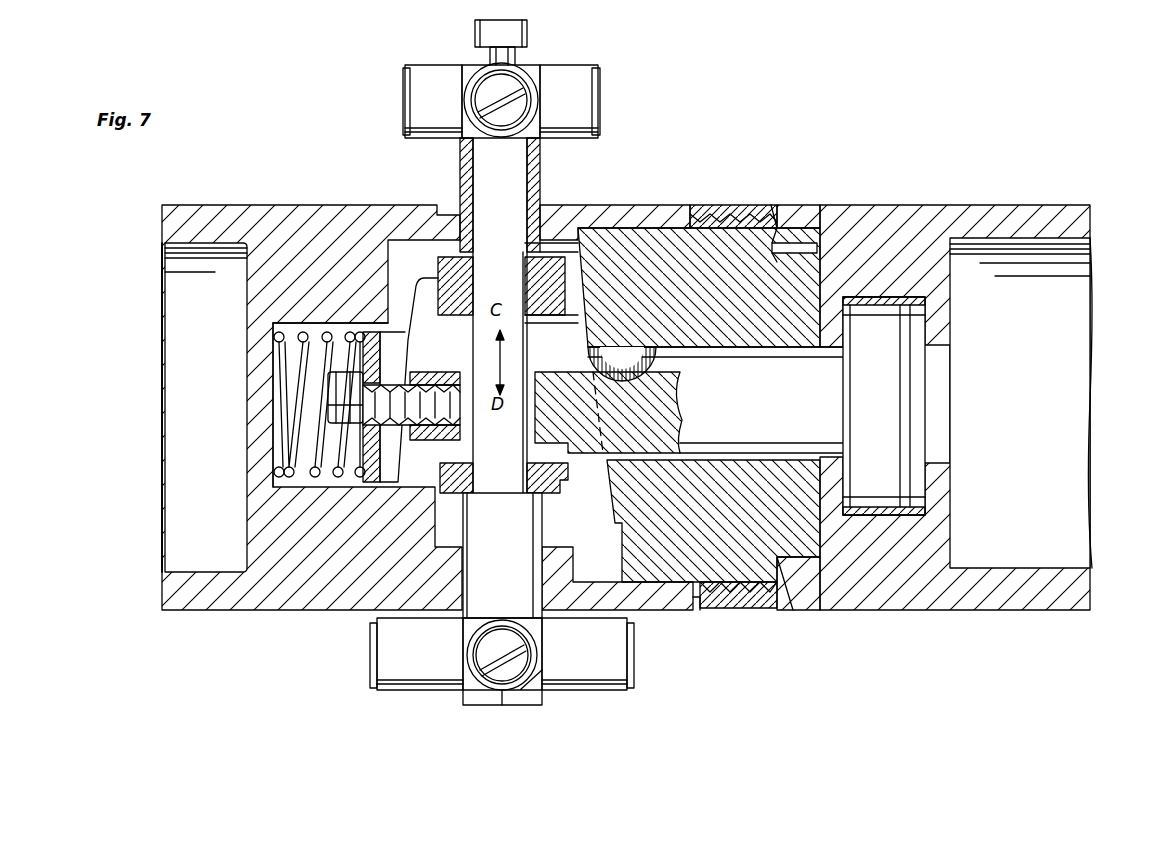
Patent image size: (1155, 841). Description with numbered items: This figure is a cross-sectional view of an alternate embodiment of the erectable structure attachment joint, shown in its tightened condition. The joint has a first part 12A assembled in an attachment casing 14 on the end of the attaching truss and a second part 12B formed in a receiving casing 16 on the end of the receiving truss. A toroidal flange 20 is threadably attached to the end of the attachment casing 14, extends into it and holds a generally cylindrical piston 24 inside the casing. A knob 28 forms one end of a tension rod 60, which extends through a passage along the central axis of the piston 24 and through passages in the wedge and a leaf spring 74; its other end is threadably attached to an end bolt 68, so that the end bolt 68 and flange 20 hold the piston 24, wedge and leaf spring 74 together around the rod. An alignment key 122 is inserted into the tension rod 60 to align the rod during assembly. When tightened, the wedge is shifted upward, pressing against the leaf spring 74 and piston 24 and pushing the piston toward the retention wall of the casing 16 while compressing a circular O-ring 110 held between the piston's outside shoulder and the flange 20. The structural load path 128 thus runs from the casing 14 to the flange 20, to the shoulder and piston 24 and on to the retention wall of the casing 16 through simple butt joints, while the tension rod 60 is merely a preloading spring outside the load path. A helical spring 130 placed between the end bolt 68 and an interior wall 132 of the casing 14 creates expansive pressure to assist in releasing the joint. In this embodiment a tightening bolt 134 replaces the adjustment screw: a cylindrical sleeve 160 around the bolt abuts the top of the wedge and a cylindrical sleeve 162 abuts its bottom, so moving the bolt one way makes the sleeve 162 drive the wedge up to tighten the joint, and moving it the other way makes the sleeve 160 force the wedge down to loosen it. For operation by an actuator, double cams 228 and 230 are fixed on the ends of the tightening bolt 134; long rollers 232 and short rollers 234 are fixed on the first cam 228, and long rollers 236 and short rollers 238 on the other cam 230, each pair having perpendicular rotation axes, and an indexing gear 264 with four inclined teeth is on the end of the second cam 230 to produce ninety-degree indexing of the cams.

The first part 12A is at (385, 178).
The second part 12B is at (1025, 168).
The attachment casing 14 is at (200, 612).
The receiving casing 16 is at (1030, 600).
The toroidal flange 20 is at (772, 600).
The piston 24 is at (640, 235).
The knob 28 is at (884, 406).
The tension rod 60 is at (715, 400).
The end bolt 68 is at (335, 396).
The leaf spring 74 is at (372, 335).
The O-ring 110 is at (800, 255).
The alignment key 122 is at (640, 360).
The structural load path 128 is at (735, 215).
The helical spring 130 is at (300, 350).
The interior wall 132 is at (265, 430).
The tightening bolt 134 is at (500, 378).
The cylindrical sleeve 160 is at (540, 178).
The cylindrical sleeve 162 is at (502, 555).
The double cam 228 is at (500, 79).
The double cam 230 is at (501, 679).
The long rollers 232 is at (472, 72).
The short rollers 234 is at (410, 90).
The long rollers 236 is at (385, 640).
The short rollers 238 is at (545, 645).
The indexing gear 264 is at (540, 705).